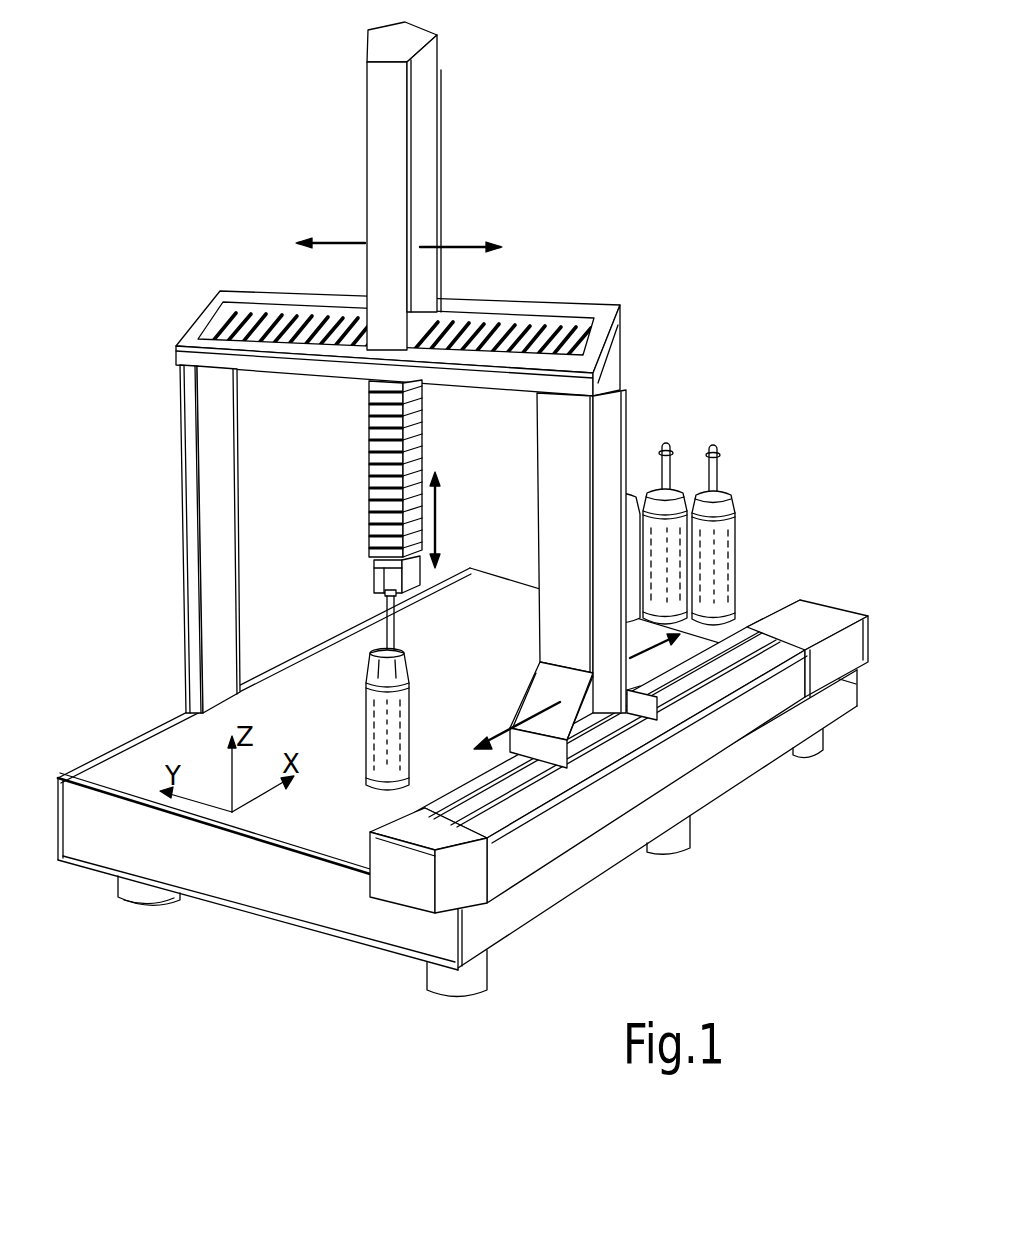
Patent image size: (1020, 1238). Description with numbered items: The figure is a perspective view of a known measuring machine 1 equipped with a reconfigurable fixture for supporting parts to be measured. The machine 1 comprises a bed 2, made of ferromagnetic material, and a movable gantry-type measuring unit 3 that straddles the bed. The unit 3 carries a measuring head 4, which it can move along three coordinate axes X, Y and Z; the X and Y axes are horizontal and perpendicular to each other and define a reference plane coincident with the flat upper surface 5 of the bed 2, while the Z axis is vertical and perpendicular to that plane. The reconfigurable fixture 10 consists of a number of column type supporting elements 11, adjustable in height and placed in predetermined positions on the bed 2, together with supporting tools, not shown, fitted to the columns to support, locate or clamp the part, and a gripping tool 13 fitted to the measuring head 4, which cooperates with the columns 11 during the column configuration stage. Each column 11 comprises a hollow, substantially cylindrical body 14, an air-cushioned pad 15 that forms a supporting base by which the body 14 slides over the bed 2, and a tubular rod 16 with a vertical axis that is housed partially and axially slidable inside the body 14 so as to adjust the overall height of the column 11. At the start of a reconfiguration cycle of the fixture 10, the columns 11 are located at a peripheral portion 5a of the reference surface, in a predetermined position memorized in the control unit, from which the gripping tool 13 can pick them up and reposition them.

The measuring machine 1 is at (212, 162).
The bed 2 is at (298, 888).
The measuring unit 3 is at (632, 340).
The measuring head 4 is at (371, 548).
The upper surface 5 is at (311, 668).
The peripheral portion 5a is at (747, 628).
The reconfigurable fixture 10 is at (423, 604).
The column type supporting element 11 is at (636, 502).
The gripping tool 13 is at (383, 585).
The cylindrical body 14 is at (397, 732).
The air-cushioned pad 15 is at (377, 797).
The tubular rod 16 is at (394, 630).